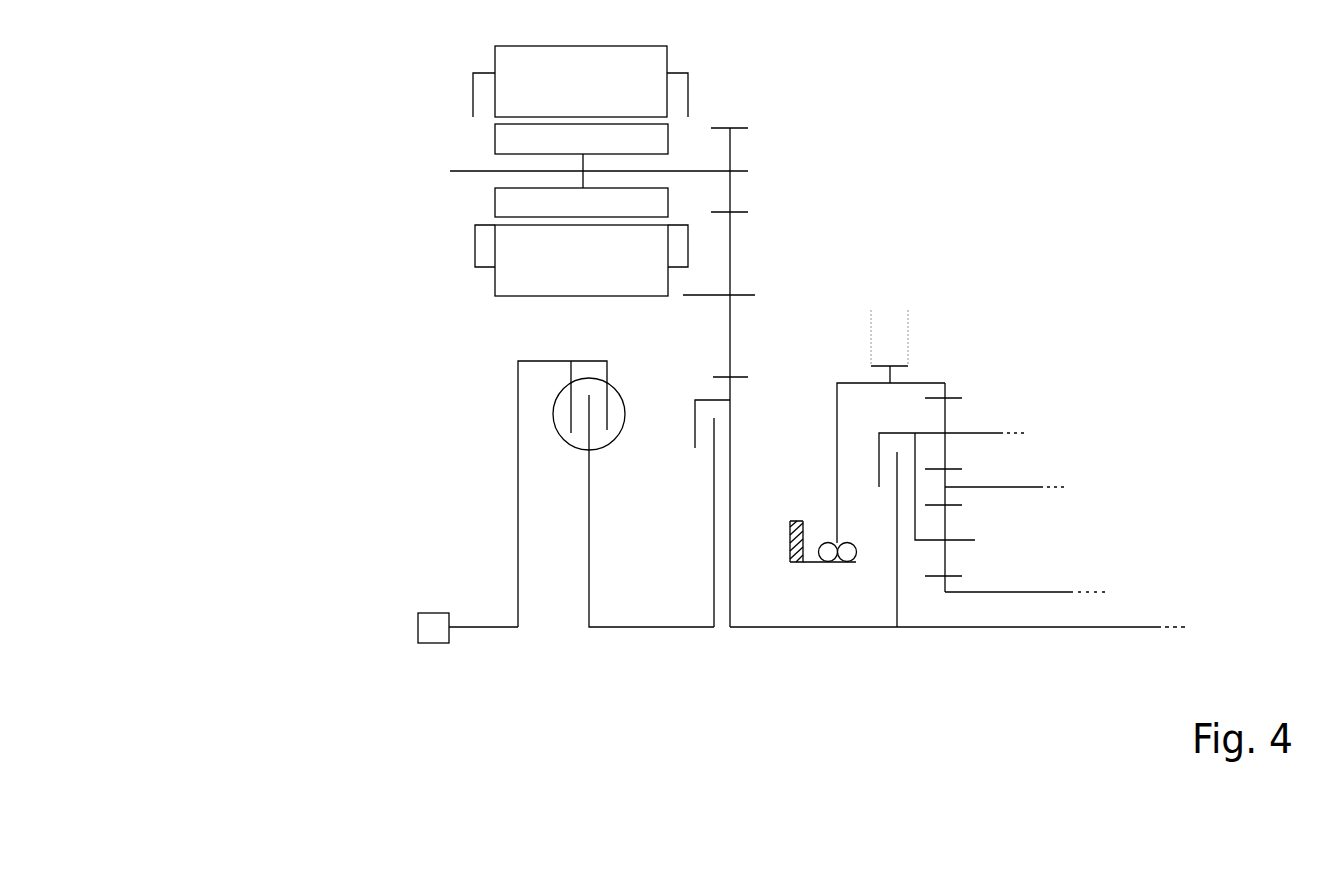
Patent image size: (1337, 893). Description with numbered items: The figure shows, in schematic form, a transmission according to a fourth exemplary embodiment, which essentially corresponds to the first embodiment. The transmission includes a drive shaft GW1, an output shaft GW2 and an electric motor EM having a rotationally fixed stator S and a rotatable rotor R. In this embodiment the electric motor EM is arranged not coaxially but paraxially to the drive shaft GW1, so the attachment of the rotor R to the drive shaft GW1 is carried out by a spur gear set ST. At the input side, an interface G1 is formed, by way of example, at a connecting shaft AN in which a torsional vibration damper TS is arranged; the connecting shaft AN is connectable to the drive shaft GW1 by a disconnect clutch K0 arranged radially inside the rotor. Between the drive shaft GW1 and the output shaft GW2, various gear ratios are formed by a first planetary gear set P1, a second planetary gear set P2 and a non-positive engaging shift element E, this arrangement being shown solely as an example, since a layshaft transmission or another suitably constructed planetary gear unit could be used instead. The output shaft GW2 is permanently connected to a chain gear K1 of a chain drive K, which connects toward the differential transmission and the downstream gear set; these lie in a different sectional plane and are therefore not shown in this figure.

The electric motor EM is at (222, 33).
The stator S is at (462, 86).
The rotor R is at (480, 138).
The spur gear set ST is at (767, 267).
The chain drive K is at (908, 330).
The chain gear K1 is at (905, 371).
The output shaft GW2 is at (928, 381).
The first planetary gear set P1 is at (990, 457).
The second planetary gear set P2 is at (992, 564).
The interface G1 is at (415, 632).
The connecting shaft AN is at (475, 628).
The torsional vibration damper TS is at (570, 462).
The disconnect clutch K0 is at (702, 476).
The drive shaft GW1 is at (765, 628).
The shift element E is at (884, 508).